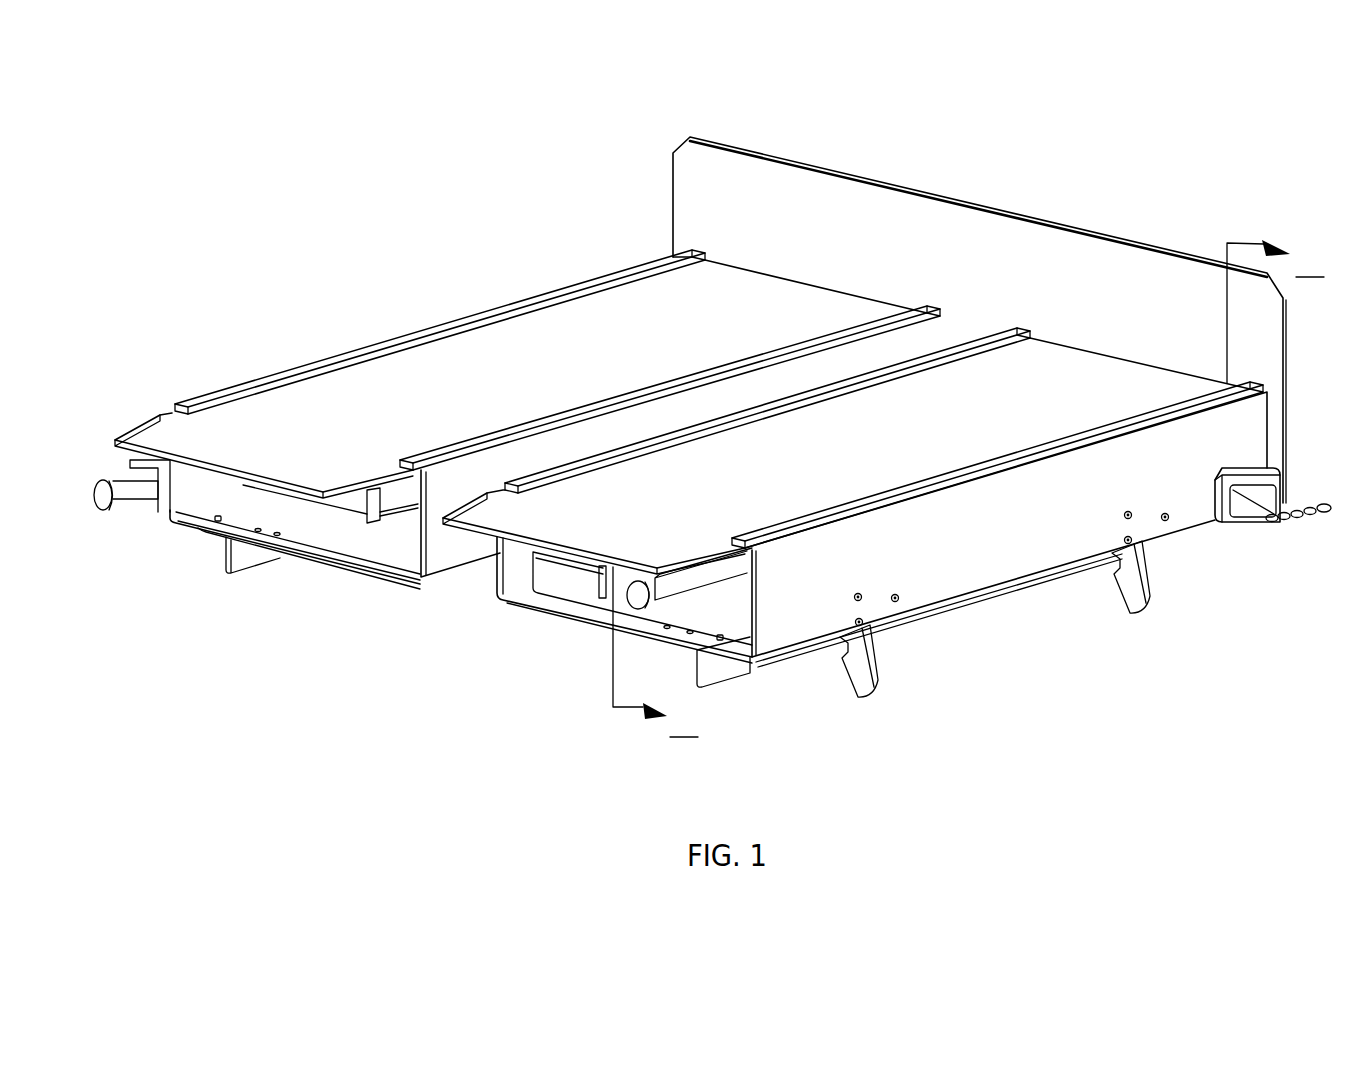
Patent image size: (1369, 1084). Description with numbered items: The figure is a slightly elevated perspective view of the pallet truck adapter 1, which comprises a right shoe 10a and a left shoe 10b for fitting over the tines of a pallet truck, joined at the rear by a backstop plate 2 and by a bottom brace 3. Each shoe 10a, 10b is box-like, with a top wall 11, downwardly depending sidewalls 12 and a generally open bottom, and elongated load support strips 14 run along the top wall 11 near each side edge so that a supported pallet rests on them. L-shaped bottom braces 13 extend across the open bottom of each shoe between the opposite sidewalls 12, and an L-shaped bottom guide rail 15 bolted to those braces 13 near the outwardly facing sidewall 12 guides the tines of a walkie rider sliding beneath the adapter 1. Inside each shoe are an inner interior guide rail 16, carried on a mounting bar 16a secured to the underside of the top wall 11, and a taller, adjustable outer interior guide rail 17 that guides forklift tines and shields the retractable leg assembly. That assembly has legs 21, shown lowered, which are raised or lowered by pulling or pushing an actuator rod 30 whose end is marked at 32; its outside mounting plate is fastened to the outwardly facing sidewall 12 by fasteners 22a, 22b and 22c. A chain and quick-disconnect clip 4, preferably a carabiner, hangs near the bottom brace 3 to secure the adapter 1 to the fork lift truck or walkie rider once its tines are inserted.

The pallet truck adapter 1 is at (1040, 178).
The backstop plate 2 is at (863, 250).
The bottom brace 3 is at (1254, 470).
The chain and quick-disconnect clip 4 is at (1323, 498).
The right shoe 10a is at (713, 352).
The left shoe 10b is at (1043, 428).
The top wall 11 is at (586, 367).
The sidewall 12 is at (170, 517).
The bottom brace 13 is at (340, 528).
The load support strip 14 is at (338, 361).
The bottom guide rail 15 is at (245, 563).
The inner interior guide rail 16 is at (383, 512).
The mounting bar 16a is at (412, 505).
The outer interior guide rail 17 is at (160, 467).
The leg 21 is at (868, 695).
The fastener 22a is at (863, 594).
The fastener 22b is at (866, 625).
The fastener 22c is at (899, 595).
The actuator rod 30 is at (128, 492).
The pin head 32 is at (105, 498).